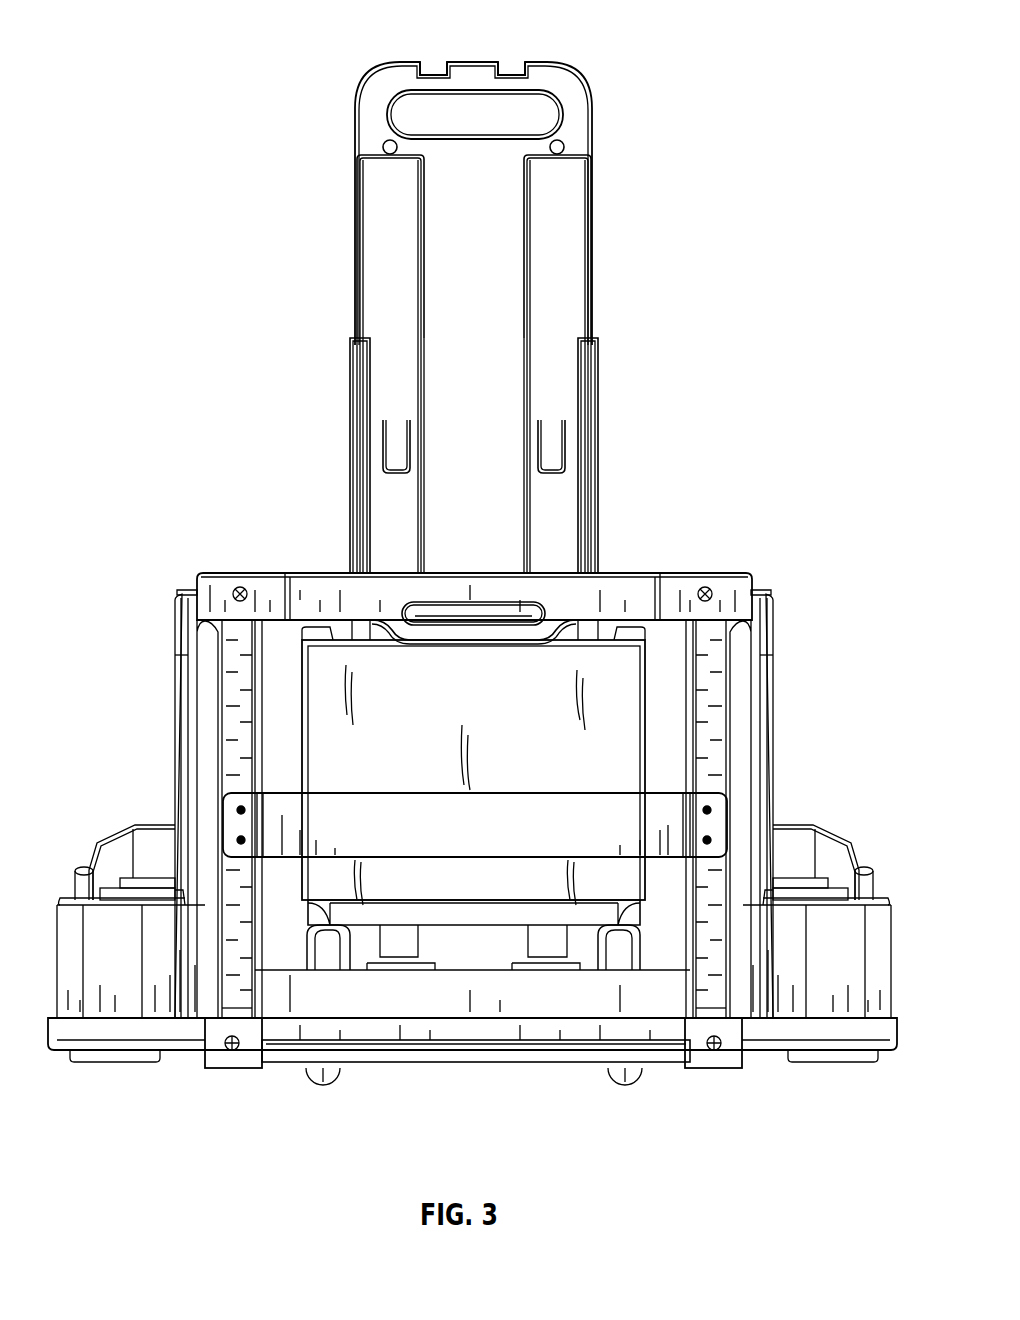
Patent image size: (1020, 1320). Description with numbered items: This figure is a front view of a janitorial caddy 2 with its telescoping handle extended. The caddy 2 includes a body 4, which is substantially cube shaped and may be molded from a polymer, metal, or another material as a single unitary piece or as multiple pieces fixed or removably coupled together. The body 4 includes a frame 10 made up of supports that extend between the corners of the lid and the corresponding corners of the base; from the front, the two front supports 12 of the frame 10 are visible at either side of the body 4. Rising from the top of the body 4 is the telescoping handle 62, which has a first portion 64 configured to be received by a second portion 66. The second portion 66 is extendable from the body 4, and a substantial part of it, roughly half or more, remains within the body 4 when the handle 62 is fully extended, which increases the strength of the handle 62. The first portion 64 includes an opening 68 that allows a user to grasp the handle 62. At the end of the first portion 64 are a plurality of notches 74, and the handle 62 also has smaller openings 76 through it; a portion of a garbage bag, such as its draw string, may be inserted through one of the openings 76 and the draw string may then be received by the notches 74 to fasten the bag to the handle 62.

The caddy 2 is at (238, 515).
The body 4 is at (690, 580).
The frame 10 is at (233, 762).
The front supports 12 is at (716, 680).
The handle 62 is at (575, 98).
The first portion 64 is at (572, 272).
The second portion 66 is at (588, 473).
The opening 68 is at (447, 105).
The notches 74 is at (512, 63).
The smaller openings 76 is at (562, 147).